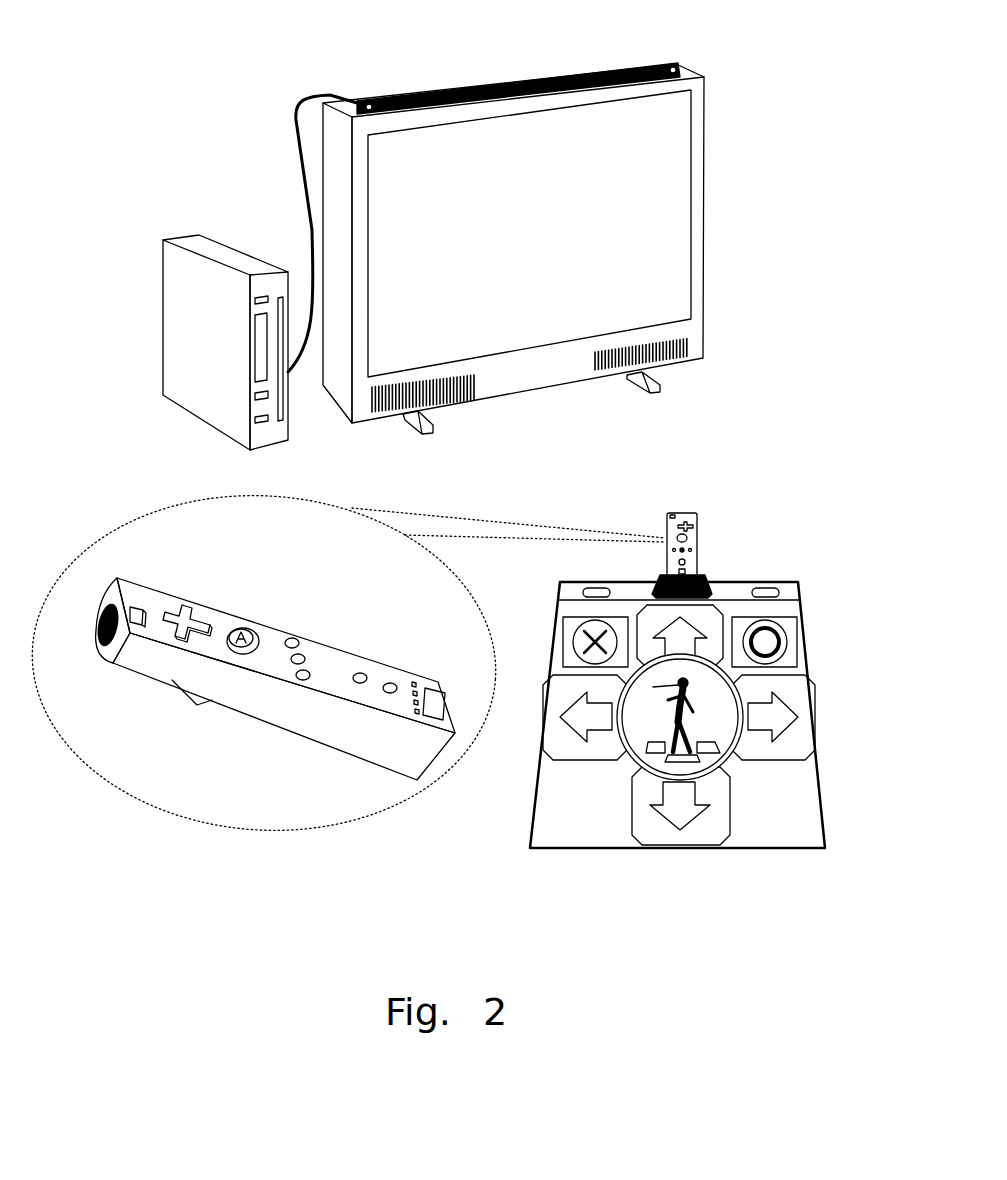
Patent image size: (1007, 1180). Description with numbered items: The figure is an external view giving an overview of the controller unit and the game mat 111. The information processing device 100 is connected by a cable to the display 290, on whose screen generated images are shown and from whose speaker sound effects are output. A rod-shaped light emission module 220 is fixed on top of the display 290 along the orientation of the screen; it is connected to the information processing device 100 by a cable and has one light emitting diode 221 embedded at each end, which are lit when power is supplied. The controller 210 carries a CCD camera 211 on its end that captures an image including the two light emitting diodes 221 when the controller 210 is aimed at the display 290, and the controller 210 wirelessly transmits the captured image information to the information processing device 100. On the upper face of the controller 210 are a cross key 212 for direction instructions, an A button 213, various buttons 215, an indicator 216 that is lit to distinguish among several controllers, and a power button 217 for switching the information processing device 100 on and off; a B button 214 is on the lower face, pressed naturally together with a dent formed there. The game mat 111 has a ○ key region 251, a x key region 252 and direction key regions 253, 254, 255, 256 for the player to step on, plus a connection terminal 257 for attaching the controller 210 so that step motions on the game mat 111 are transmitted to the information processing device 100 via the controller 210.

The information processing device 100 is at (218, 252).
The game mat 111 is at (802, 597).
The controller 210 is at (697, 520).
The CCD camera 211 is at (102, 627).
The cross key 212 is at (187, 604).
The A button 213 is at (250, 626).
The B button 214 is at (182, 698).
The various buttons 215 is at (390, 683).
The indicator 216 is at (425, 680).
The power button 217 is at (140, 606).
The light emission module 220 is at (483, 83).
The light emitting diode 221 is at (368, 102).
The ○ key region 251 is at (781, 648).
The x key region 252 is at (575, 624).
The direction key region 253 is at (641, 613).
The direction key region 254 is at (690, 838).
The direction key region 255 is at (557, 749).
The direction key region 256 is at (797, 707).
The connection terminal 257 is at (710, 578).
The display 290 is at (700, 172).